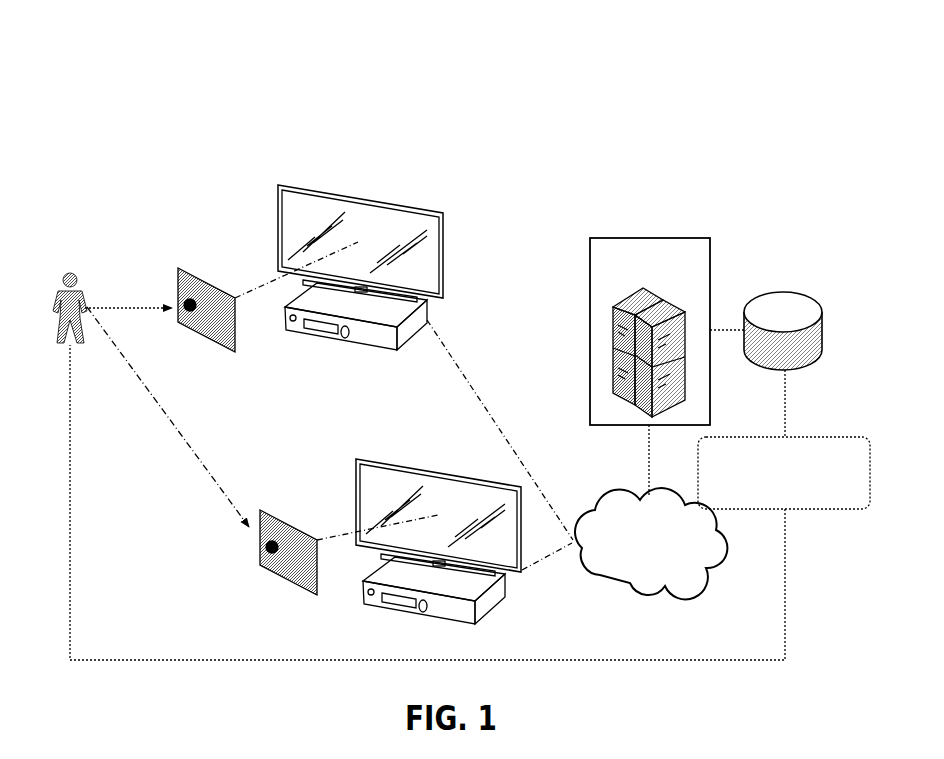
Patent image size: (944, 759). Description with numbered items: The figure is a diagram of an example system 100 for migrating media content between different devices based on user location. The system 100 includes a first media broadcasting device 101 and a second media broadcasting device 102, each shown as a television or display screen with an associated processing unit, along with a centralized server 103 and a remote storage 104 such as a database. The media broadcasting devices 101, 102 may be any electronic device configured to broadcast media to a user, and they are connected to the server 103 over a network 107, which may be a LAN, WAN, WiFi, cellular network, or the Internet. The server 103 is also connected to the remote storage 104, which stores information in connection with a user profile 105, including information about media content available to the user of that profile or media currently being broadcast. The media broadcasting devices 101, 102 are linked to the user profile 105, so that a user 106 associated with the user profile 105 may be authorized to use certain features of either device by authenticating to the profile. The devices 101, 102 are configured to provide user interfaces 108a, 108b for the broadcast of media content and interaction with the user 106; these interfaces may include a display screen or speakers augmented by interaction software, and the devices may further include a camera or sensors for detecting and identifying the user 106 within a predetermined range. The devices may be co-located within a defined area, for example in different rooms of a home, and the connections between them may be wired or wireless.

The system 100 is at (616, 107).
The first media broadcasting device 101 is at (358, 203).
The second media broadcasting device 102 is at (428, 470).
The server 103 is at (650, 237).
The remote storage 104 is at (803, 293).
The user profile 105 is at (784, 473).
The user 106 is at (63, 280).
The network 107 is at (651, 543).
The user interface 108a is at (202, 276).
The user interface 108b is at (273, 515).